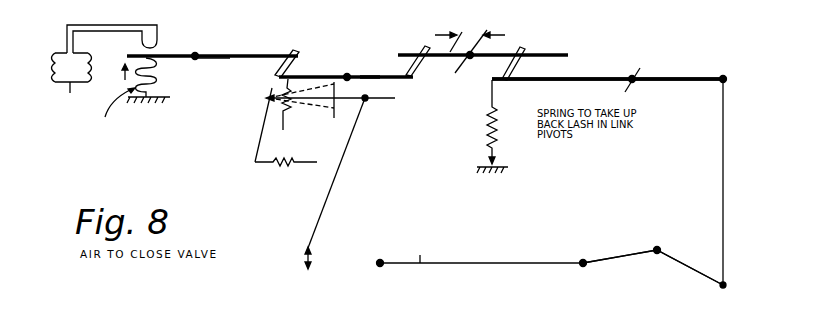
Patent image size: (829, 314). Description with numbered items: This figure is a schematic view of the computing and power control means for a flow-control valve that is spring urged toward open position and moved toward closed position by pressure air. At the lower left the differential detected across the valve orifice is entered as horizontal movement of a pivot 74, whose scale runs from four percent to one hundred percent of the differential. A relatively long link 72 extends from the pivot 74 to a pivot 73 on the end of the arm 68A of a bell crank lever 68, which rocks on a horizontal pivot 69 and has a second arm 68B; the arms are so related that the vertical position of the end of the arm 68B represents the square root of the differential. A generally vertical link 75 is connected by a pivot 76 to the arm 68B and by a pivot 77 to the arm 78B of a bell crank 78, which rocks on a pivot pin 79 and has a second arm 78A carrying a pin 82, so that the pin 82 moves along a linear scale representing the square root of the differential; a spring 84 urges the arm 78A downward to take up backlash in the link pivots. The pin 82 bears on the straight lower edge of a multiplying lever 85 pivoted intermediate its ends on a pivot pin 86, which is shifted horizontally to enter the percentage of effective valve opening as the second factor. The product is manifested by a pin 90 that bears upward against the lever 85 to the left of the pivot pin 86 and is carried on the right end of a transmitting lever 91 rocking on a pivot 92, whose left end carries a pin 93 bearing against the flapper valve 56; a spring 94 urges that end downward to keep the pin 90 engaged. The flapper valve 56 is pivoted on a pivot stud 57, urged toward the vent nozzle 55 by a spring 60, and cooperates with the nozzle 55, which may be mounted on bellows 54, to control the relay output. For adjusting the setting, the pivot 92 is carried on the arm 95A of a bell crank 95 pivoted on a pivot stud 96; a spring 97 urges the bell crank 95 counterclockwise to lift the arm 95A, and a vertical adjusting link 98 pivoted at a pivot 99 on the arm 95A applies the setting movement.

The bellows 54 is at (55, 58).
The vent nozzle 55 is at (156, 42).
The flapper valve 56 is at (221, 60).
The pivot stud 57 is at (204, 52).
The spring 60 is at (155, 77).
The bell crank lever 68 is at (677, 252).
The arm 68A is at (610, 262).
The arm 68B is at (692, 272).
The horizontal pivot 69 is at (657, 246).
The link 72 is at (465, 265).
The pivot 73 is at (581, 266).
The pivot 74 is at (381, 265).
The vertical link 75 is at (723, 182).
The pivot 76 is at (727, 285).
The pivot 77 is at (725, 79).
The bell crank 78 is at (674, 74).
The arm 78A is at (562, 80).
The arm 78B is at (675, 80).
The pivot pin 79 is at (632, 76).
The pin 82 is at (516, 69).
The spring 84 is at (487, 131).
The multiplying lever 85 is at (503, 52).
The pivot pin 86 is at (488, 27).
The pin 90 is at (418, 72).
The transmitting lever 91 is at (370, 74).
The pivot 92 is at (347, 73).
The pin 93 is at (291, 50).
The spring 94 is at (287, 116).
The bell crank 95 is at (261, 130).
The arm 95A is at (344, 100).
The pivot stud 96 is at (268, 99).
The spring 97 is at (276, 165).
The vertical adjusting link 98 is at (336, 183).
The pivot 99 is at (367, 102).